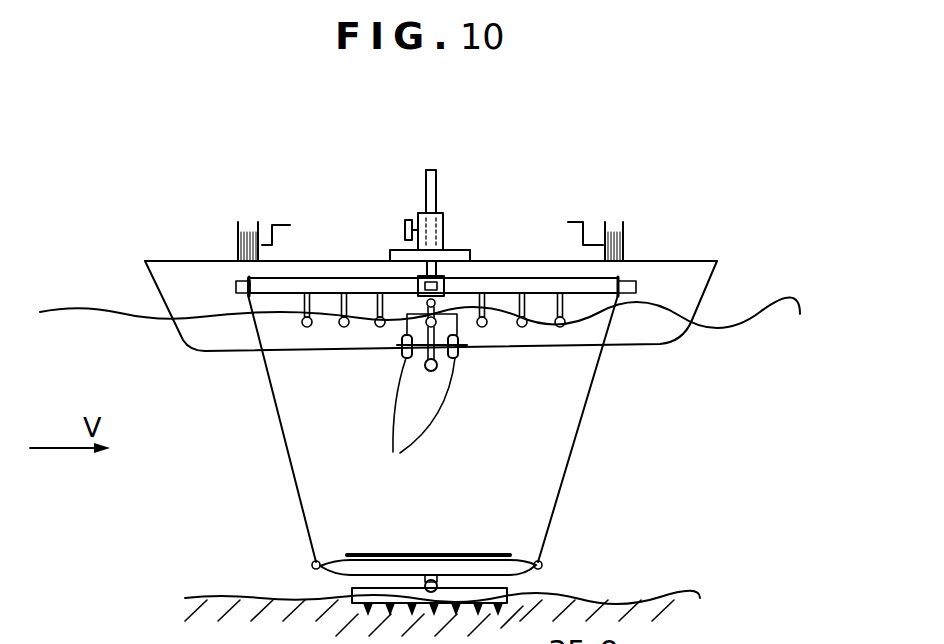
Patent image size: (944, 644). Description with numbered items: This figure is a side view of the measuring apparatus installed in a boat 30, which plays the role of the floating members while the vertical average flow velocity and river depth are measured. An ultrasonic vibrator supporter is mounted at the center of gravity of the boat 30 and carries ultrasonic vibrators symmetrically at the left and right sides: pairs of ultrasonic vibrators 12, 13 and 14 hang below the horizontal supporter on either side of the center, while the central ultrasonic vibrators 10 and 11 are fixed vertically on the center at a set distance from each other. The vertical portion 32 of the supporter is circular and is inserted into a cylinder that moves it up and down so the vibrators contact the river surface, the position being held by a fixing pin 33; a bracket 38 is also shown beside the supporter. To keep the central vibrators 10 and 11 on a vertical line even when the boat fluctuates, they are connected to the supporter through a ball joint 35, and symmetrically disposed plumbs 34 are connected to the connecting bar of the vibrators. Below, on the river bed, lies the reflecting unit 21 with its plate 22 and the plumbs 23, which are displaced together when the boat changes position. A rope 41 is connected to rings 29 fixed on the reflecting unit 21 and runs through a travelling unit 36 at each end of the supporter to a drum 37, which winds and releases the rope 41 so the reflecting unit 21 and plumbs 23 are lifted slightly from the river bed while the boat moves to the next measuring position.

The ultrasonic vibrator 10 is at (407, 318).
The ultrasonic vibrator 11 is at (431, 371).
The ultrasonic vibrator 12 is at (436, 322).
The ultrasonic vibrator 13 is at (438, 322).
The ultrasonic vibrator 14 is at (437, 322).
The reflecting unit 21 is at (480, 560).
The sled plate 22 is at (411, 556).
The plumb 23 is at (507, 597).
The ring 29 is at (313, 563).
The boat 30 is at (705, 285).
The vertical portion 32 is at (437, 200).
The fixing pin 33 is at (405, 230).
The plumb 34 is at (415, 423).
The ball joint 35 is at (428, 306).
The travelling unit 36 is at (240, 282).
The drum 37 is at (245, 228).
The bracket 38 is at (288, 225).
The rope 41 is at (583, 422).